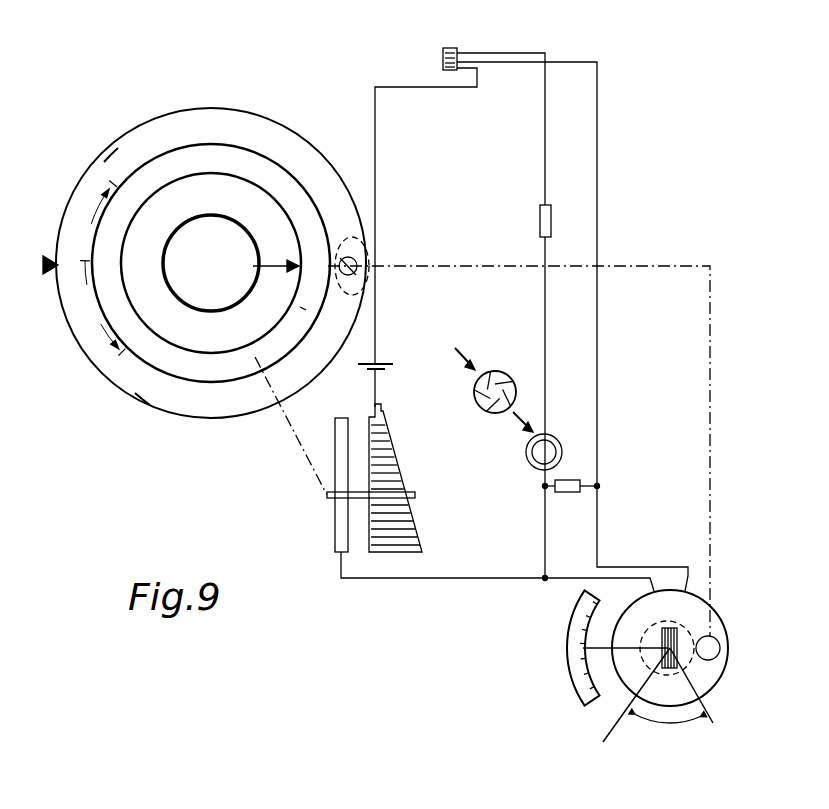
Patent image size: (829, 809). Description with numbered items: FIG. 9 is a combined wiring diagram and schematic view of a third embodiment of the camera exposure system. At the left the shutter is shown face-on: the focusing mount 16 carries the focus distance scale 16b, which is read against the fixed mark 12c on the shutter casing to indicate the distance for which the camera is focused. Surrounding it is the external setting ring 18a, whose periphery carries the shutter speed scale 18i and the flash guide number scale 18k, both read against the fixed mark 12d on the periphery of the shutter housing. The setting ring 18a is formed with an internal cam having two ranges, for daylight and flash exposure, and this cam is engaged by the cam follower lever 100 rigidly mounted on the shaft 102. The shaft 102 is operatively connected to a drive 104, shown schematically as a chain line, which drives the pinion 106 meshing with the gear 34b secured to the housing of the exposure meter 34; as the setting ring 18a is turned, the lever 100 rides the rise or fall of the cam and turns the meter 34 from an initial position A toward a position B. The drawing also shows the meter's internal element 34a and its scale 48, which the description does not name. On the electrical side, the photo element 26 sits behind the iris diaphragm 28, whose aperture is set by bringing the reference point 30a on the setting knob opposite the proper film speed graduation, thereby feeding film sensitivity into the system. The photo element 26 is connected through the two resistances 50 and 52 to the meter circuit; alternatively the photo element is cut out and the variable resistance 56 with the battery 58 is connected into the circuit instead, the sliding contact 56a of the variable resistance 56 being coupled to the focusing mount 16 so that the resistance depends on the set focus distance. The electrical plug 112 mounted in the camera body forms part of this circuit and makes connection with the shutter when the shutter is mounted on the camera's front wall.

The fixed mark 12c is at (253, 266).
The fixed mark 12d is at (50, 275).
The focusing mount 16 is at (191, 384).
The focus distance scale 16b is at (292, 313).
The setting ring 18a is at (239, 125).
The shutter speed scale 18i is at (135, 398).
The flash guide number scale 18k is at (104, 163).
The photo element 26 is at (536, 460).
The iris diaphragm 28 is at (503, 384).
The reference point 30a is at (474, 404).
The exposure meter 34 is at (659, 679).
The meter coil 34a is at (630, 643).
The gear 34b is at (650, 668).
The meter scale 48 is at (582, 652).
The resistance 50 is at (569, 493).
The resistance 52 is at (540, 222).
The variable resistance 56 is at (394, 478).
The sliding contact 56a is at (415, 497).
The battery 58 is at (386, 371).
The cam follower lever 100 is at (368, 245).
The shaft 102 is at (368, 287).
The drive 104 is at (636, 266).
The pinion 106 is at (698, 567).
The electrical plug 112 is at (450, 47).